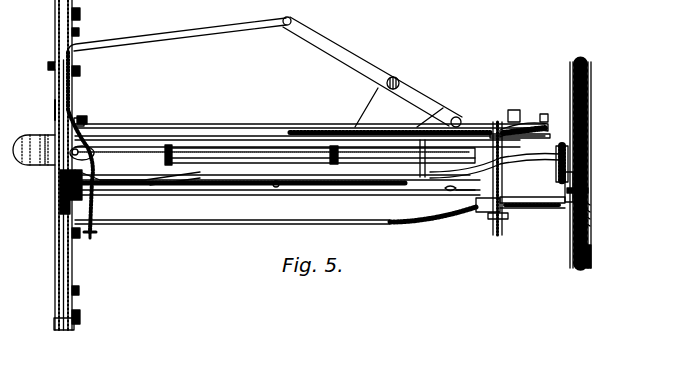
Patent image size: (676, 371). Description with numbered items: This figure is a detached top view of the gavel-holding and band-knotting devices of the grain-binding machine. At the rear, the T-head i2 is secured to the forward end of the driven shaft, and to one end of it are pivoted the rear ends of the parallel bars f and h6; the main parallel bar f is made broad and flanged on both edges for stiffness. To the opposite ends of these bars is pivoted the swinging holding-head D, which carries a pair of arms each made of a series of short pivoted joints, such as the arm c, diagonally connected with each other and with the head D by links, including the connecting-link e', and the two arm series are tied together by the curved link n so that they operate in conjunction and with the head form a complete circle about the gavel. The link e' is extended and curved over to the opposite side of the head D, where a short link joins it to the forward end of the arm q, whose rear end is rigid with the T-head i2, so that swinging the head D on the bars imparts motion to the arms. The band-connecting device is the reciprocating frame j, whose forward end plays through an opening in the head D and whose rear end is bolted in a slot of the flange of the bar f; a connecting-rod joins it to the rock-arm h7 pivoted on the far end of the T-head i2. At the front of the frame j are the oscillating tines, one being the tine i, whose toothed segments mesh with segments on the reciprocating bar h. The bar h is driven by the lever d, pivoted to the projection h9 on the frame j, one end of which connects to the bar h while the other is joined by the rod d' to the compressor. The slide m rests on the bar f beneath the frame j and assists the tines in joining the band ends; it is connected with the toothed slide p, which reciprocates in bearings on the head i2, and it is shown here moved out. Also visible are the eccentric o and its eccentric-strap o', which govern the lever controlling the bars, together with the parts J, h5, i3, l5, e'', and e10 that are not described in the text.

The short joint or arm c is at (63, 171).
The swinging holding-head D is at (45, 108).
The slide m is at (246, 165).
The rod d' is at (179, 32).
The lever d is at (372, 72).
The projection h9 is at (399, 107).
The parallel bar h6 is at (310, 116).
The rail h5 is at (318, 122).
The rock-arm h7 is at (520, 116).
The reciprocating bar h is at (320, 158).
The rod i3 is at (340, 156).
The T-head i2 is at (492, 178).
The main parallel bar f is at (232, 186).
The oscillating tine i is at (277, 181).
The reciprocating frame j is at (495, 166).
The eccentric o is at (500, 170).
The eccentric-strap o' is at (565, 158).
The slide p is at (536, 186).
The bar l5 is at (540, 198).
The arm q is at (470, 210).
The connecting-link e' is at (82, 142).
The curved link n is at (72, 207).
The belt end e'' is at (91, 236).
The column J is at (587, 165).
The bar e10 is at (591, 207).